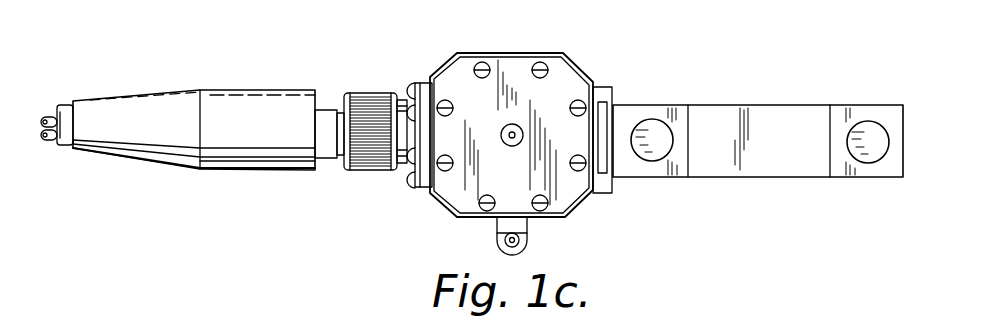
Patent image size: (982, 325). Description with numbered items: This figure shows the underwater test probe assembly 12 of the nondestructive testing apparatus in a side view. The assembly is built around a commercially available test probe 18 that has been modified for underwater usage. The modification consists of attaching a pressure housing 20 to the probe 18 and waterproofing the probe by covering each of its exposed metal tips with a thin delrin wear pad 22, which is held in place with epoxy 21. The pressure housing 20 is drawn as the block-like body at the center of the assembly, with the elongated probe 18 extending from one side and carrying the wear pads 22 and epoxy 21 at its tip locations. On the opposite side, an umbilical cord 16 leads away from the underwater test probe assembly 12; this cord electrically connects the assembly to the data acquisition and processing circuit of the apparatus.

The underwater test probe assembly 12 is at (412, 53).
The umbilical cord 16 is at (242, 172).
The test probe 18 is at (780, 120).
The pressure housing 20 is at (470, 216).
The epoxy 21 is at (678, 165).
The delrin wear pad 22 is at (655, 148).